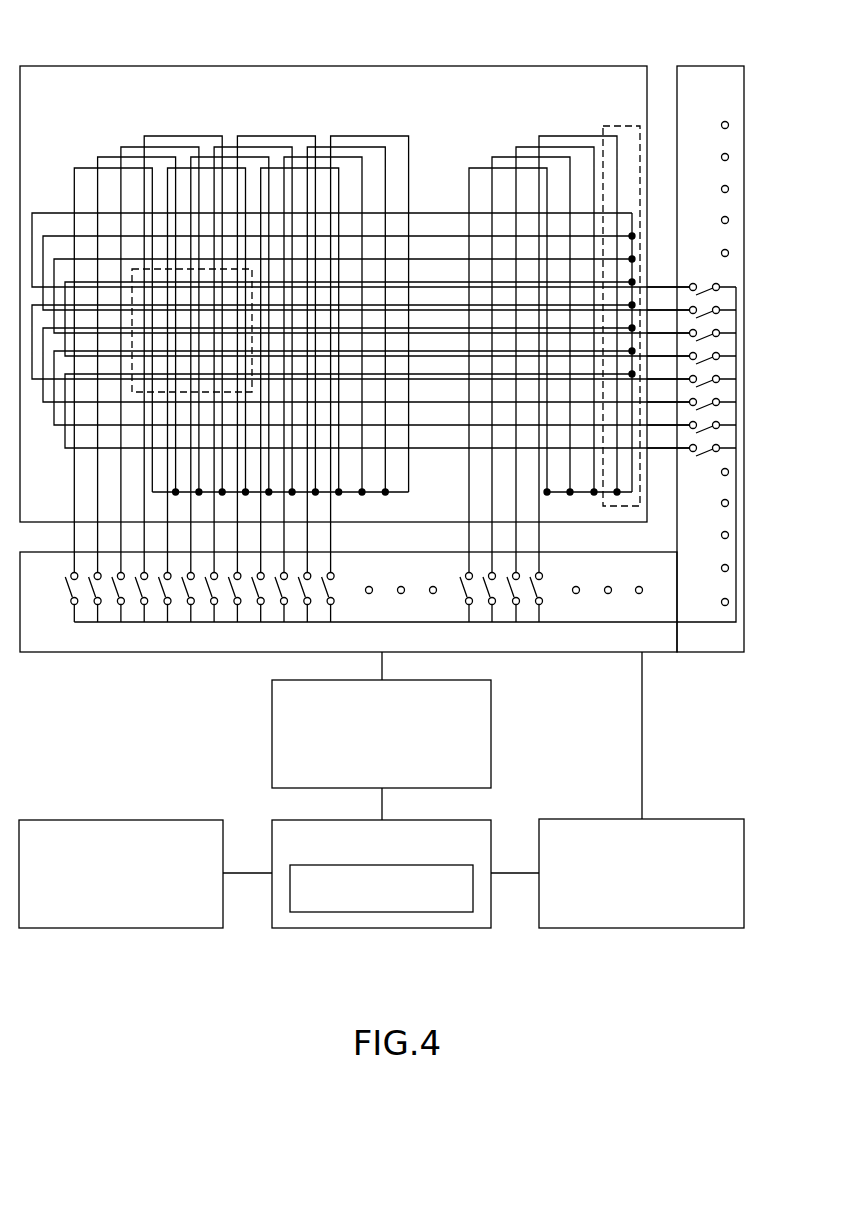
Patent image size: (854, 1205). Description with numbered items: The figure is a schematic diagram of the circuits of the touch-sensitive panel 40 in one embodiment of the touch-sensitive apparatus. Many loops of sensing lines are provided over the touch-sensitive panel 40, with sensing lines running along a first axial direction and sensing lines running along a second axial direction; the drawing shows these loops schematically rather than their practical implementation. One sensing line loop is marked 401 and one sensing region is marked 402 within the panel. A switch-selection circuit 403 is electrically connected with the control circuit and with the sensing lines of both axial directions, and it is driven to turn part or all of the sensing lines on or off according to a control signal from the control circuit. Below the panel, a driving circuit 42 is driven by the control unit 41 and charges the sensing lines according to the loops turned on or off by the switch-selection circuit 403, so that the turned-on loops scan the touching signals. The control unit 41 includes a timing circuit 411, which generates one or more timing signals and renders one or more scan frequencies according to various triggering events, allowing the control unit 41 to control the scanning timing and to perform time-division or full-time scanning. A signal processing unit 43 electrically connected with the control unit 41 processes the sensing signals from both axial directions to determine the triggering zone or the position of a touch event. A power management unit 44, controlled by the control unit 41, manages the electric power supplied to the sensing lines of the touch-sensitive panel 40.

The touch-sensitive panel 40 is at (280, 72).
The sensing electrode 401 is at (620, 126).
The sensing unit 402 is at (160, 269).
The switch-selection circuit 403 is at (103, 647).
The control unit 41 is at (432, 930).
The timing circuit 411 is at (381, 914).
The driving circuit 42 is at (272, 735).
The signal processing unit 43 is at (120, 930).
The power management unit 44 is at (640, 930).